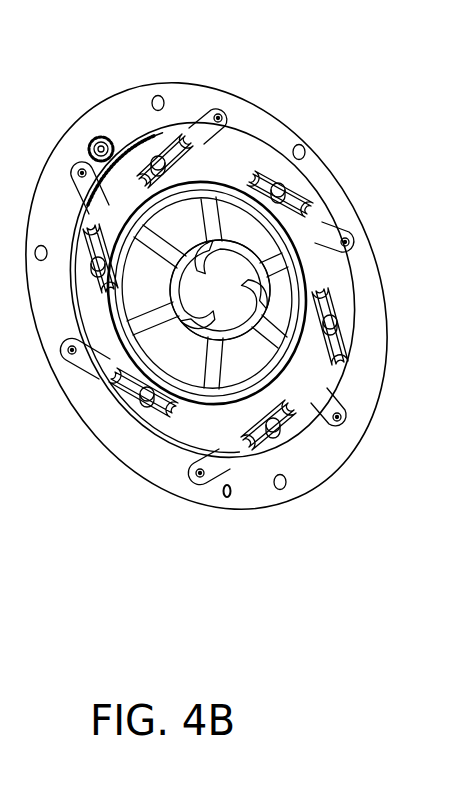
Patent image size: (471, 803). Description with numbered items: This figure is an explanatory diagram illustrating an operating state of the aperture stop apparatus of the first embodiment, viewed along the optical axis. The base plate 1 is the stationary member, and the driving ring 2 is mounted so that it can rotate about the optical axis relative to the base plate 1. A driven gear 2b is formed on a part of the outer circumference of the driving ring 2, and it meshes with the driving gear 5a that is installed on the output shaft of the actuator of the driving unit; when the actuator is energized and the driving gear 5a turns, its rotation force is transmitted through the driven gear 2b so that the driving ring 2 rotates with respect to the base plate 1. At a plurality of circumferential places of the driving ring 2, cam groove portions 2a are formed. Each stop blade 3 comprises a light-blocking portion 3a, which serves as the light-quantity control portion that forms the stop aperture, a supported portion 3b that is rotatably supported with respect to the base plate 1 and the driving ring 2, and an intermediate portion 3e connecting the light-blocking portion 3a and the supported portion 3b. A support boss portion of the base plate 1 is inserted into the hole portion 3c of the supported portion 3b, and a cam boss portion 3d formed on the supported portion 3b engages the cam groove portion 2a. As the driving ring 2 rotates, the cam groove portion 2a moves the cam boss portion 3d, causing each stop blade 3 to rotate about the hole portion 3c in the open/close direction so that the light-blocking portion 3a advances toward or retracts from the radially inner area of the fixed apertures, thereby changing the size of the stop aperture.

The base plate 1 is at (347, 182).
The driving ring 2 is at (318, 260).
The cam groove portion 2a is at (335, 301).
The driven gear 2b is at (141, 136).
The stop blade 3 is at (315, 145).
The light-blocking portion 3a is at (247, 325).
The supported portion 3b is at (295, 320).
The hole portion 3c is at (343, 419).
The cam boss portion 3d is at (335, 323).
The intermediate portion 3e is at (256, 305).
The driving gear 5a is at (96, 140).